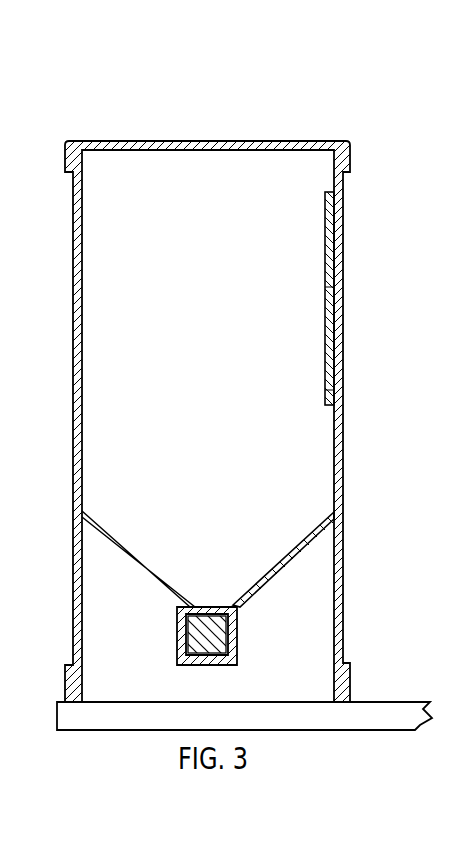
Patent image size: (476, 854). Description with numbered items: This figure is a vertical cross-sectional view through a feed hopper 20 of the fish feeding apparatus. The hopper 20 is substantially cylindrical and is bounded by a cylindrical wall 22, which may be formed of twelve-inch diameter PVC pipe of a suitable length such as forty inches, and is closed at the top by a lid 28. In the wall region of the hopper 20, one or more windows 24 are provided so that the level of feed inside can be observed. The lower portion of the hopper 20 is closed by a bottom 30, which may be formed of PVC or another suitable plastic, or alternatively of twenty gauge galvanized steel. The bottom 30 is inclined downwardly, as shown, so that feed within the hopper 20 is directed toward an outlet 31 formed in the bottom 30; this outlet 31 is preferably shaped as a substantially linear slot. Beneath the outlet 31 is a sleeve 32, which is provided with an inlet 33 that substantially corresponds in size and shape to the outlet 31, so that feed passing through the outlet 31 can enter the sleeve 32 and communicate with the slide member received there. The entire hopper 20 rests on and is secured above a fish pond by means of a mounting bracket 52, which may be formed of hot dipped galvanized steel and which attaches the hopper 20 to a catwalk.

The hopper 20 is at (193, 388).
The cylindrical wall 22 is at (73, 340).
The window 24 is at (336, 258).
The lid 28 is at (265, 141).
The bottom 30 is at (289, 558).
The outlet 31 is at (215, 609).
The sleeve 32 is at (191, 617).
The inlet 33 is at (201, 613).
The mounting bracket 52 is at (414, 720).